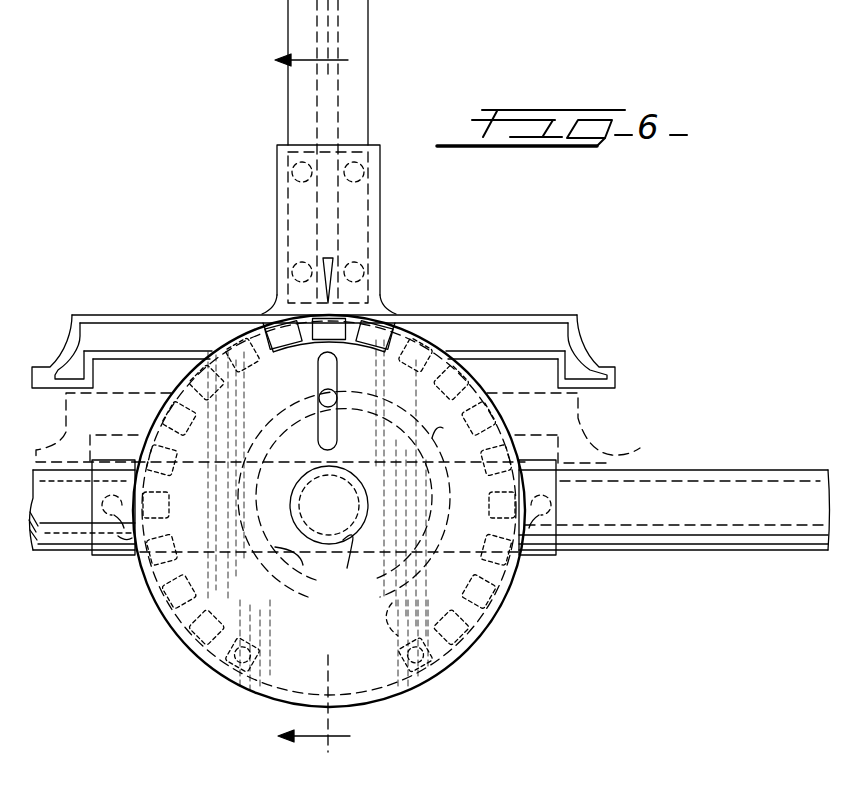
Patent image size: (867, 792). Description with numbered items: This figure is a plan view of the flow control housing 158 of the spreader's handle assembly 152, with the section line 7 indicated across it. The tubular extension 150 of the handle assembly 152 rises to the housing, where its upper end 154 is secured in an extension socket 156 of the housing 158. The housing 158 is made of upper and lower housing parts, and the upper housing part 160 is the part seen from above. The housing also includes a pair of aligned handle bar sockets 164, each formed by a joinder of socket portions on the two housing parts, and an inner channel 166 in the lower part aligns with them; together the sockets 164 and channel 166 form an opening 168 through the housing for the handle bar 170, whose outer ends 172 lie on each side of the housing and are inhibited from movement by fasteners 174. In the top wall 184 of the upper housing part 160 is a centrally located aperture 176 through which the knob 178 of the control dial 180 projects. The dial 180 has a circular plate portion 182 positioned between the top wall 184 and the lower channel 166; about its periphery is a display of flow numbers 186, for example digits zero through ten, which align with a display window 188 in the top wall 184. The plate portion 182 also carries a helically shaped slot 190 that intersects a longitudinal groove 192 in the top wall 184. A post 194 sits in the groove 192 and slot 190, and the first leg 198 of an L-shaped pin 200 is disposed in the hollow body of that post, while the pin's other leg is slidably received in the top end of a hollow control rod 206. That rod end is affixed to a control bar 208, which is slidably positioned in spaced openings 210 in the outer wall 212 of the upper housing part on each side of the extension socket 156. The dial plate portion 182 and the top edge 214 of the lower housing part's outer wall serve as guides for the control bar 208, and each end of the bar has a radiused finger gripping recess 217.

The section line 7- 7 is at (312, 379).
The tubular extension 150 is at (357, 122).
The handle assembly 152 is at (403, 297).
The upper end 154 is at (362, 240).
The extension socket 156 is at (382, 200).
The flow control housing 158 is at (490, 612).
The upper housing part 160 is at (278, 670).
The handle bar sockets 164 is at (112, 560).
The inner channel 166 is at (245, 582).
The opening 168 is at (560, 490).
The handle bar 170 is at (45, 563).
The outer ends 172 is at (780, 492).
The fasteners 174 is at (133, 525).
The aperture 176 is at (343, 564).
The knob 178 is at (303, 512).
The control dial 180 is at (400, 688).
The circular plate portion 182 is at (308, 703).
The top wall 184 is at (336, 628).
The flow numbers 186 is at (306, 323).
The display window 188 is at (318, 340).
The helically shaped slot 190 is at (344, 494).
The longitudinal groove 192 is at (334, 381).
The post 194 is at (319, 399).
The first leg 198 is at (362, 393).
The L-shaped pin 200 is at (355, 416).
The hollow control rod 206 is at (322, 92).
The control bar 208 is at (513, 312).
The spaced openings 210 is at (147, 418).
The outer wall 212 is at (478, 386).
The top edge 214 is at (207, 318).
The finger gripping recess 217 is at (68, 342).